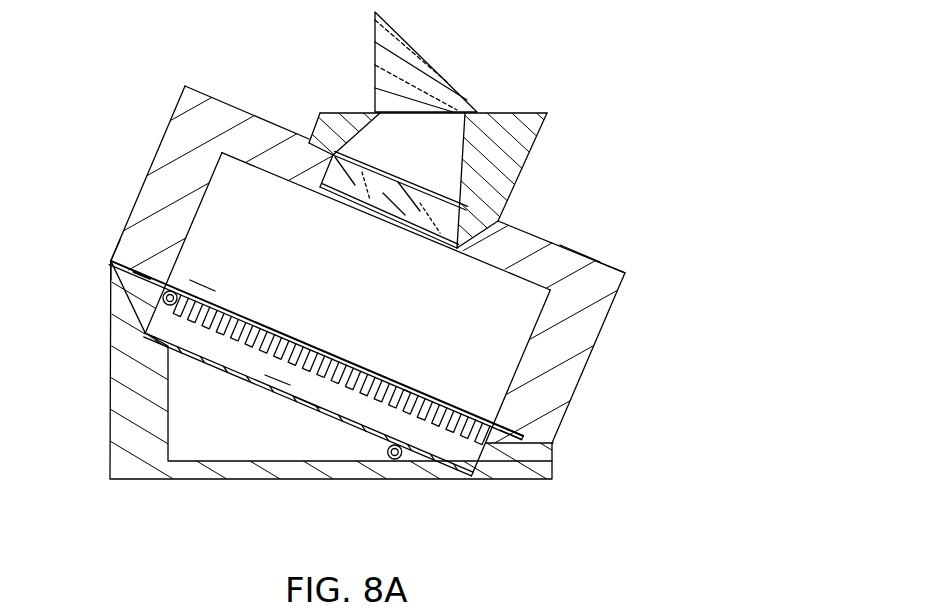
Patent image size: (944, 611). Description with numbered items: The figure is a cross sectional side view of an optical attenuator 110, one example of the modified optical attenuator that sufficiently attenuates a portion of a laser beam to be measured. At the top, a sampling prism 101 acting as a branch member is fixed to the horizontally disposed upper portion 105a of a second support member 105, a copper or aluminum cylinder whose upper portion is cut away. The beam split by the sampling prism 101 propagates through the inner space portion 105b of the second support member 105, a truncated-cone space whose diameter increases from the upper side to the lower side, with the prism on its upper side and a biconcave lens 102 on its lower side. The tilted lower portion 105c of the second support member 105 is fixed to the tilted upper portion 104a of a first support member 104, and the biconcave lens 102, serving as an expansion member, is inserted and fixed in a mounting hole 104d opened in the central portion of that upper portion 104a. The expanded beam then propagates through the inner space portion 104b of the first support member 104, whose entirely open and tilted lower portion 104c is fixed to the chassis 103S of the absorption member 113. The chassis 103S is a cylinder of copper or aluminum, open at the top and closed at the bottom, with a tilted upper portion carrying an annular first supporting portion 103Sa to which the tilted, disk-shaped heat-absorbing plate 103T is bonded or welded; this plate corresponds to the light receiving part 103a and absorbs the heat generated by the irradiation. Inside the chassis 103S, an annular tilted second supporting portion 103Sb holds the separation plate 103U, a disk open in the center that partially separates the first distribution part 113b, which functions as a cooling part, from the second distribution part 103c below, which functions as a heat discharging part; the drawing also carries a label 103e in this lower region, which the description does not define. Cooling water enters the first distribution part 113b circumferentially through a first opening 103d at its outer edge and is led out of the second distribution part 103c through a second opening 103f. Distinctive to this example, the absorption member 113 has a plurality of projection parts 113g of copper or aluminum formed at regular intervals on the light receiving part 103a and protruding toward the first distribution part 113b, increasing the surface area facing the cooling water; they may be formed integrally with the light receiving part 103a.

The optical attenuator 110 is at (50, 26).
The sampling prism 101 is at (443, 87).
The biconcave lens 102 is at (485, 230).
The light receiving part 103a is at (207, 350).
The second distribution part 103c is at (345, 419).
The first opening 103d is at (168, 306).
The plate body 103e is at (307, 403).
The second opening 103f is at (386, 462).
The chassis 103S is at (530, 467).
The first supporting portion 103Sa is at (512, 428).
The second supporting portion 103Sb is at (530, 450).
The heat-absorbing plate 103T is at (438, 420).
The separation plate 103U is at (405, 442).
The first support member 104 is at (585, 368).
The upper portion 104a is at (596, 237).
The inner space portion 104b is at (596, 262).
The lower portion 104c is at (110, 260).
The mounting hole 104d is at (468, 192).
The second support member 105 is at (520, 163).
The upper portion 105a is at (528, 113).
The inner space portion 105b is at (518, 142).
The lower portion 105c is at (313, 147).
The absorption member 113 is at (553, 460).
The first distribution part 113b is at (277, 368).
The projection part 113g is at (200, 294).